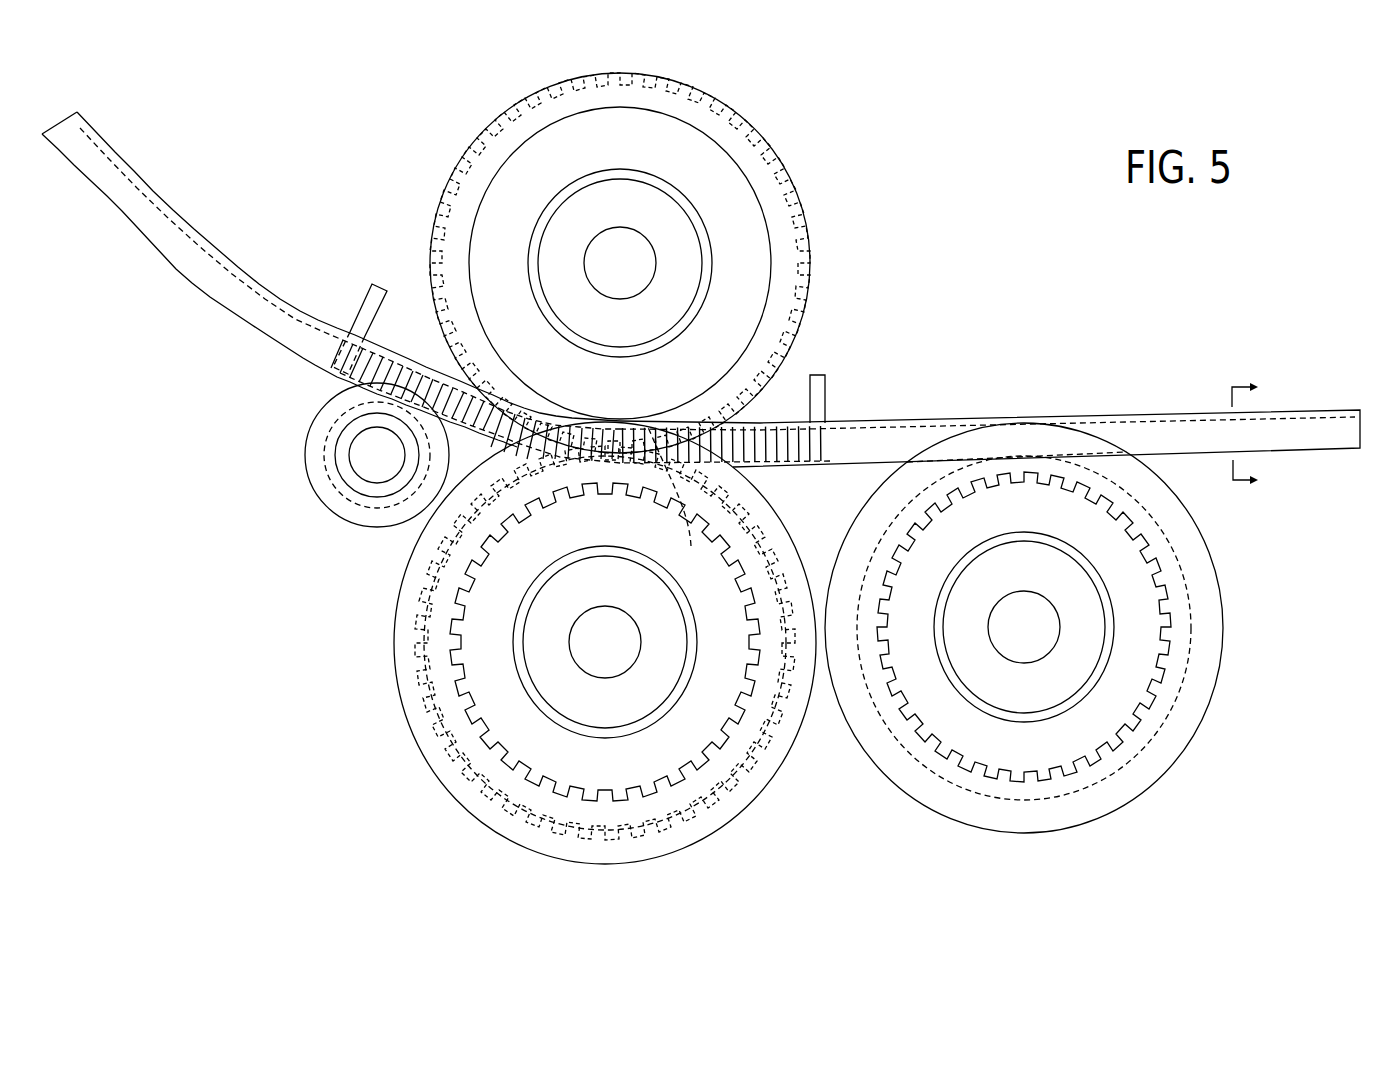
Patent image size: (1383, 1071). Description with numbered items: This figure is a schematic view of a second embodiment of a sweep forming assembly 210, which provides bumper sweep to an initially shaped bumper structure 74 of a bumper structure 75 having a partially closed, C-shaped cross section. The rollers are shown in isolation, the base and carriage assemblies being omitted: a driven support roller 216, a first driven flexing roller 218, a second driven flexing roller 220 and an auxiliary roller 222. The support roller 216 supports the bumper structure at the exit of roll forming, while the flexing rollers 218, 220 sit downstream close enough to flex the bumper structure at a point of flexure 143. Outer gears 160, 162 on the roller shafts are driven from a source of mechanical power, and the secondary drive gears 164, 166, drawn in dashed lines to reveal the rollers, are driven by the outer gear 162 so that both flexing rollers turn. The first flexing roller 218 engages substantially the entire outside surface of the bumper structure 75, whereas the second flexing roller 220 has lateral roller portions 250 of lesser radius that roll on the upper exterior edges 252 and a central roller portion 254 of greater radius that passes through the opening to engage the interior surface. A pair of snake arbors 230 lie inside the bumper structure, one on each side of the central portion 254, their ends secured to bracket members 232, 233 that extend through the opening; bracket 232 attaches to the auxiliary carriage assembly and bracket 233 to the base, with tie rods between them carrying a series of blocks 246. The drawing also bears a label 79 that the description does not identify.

The sweep forming assembly 210 is at (850, 166).
The first web 79 is at (191, 262).
The bracket member 232 is at (380, 283).
The auxiliary roller 222 is at (325, 508).
The second driven flexing roller 220 is at (806, 236).
The lateral roller portions 250 is at (540, 157).
The central roller portion 254 is at (575, 98).
The secondary drive gear 166 is at (810, 266).
The bracket member 233 is at (823, 382).
The snake arbor 230 is at (800, 462).
The blocks 246 is at (777, 468).
The upper exterior edges 252 is at (917, 418).
The bumper structure 75 is at (1303, 407).
The initially shaped bumper structure 74 is at (1317, 435).
The point of flexure 143 is at (691, 546).
The first driven flexing roller 218 is at (768, 785).
The secondary drive gear 164 is at (445, 743).
The outer gear 162 is at (697, 740).
The driven support roller 216 is at (1222, 575).
The outer gear 160 is at (1137, 715).